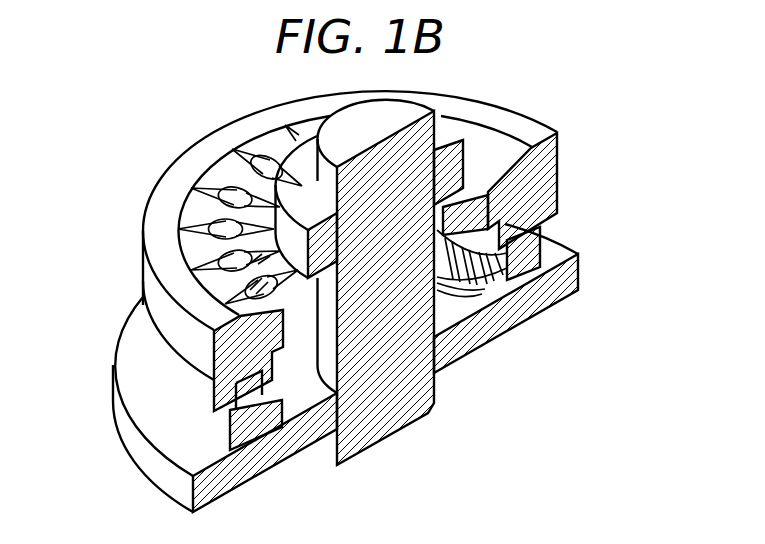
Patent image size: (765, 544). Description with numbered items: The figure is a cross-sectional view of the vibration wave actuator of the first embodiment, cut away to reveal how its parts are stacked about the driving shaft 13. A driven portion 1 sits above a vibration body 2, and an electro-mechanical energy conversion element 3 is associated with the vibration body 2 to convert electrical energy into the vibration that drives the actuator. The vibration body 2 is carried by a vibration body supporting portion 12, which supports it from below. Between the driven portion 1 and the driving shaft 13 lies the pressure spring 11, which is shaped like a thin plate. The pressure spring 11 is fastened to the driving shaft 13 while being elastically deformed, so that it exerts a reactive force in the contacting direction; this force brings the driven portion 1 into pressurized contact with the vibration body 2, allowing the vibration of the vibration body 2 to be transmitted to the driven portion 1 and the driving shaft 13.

The driven portion 1 is at (540, 203).
The vibration body 2 is at (577, 250).
The electro-mechanical energy conversion element 3 is at (233, 430).
The pressure spring 11 is at (190, 241).
The vibration body supporting portion 12 is at (205, 490).
The driving shaft 13 is at (413, 403).